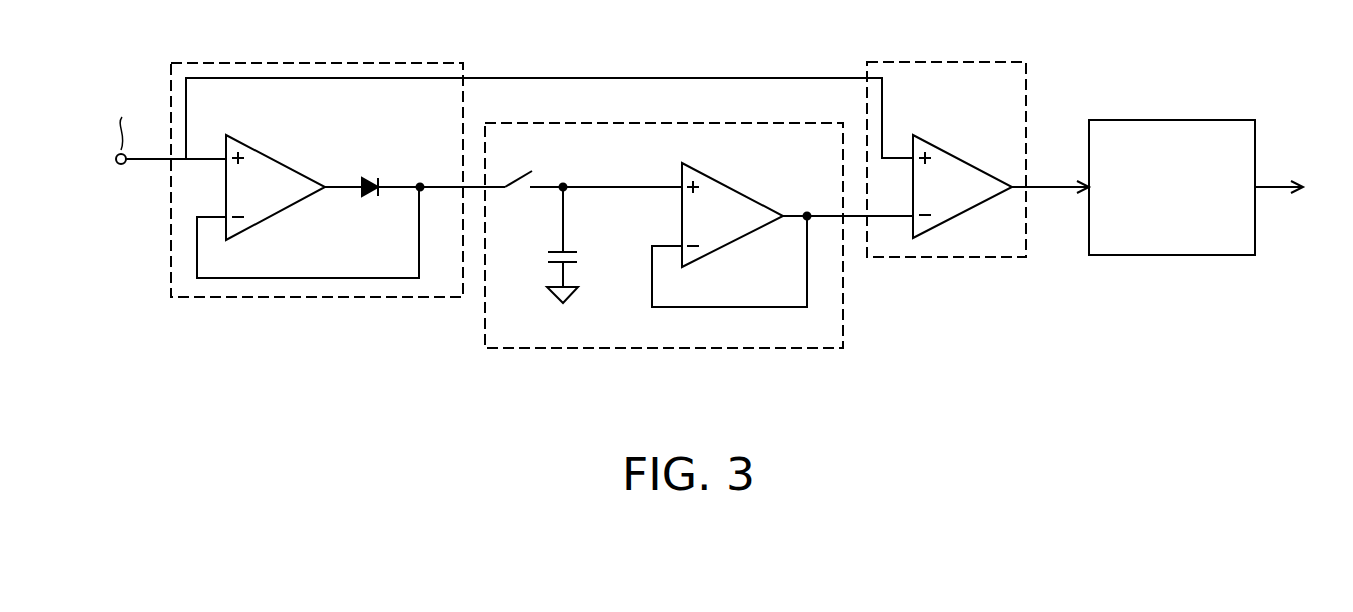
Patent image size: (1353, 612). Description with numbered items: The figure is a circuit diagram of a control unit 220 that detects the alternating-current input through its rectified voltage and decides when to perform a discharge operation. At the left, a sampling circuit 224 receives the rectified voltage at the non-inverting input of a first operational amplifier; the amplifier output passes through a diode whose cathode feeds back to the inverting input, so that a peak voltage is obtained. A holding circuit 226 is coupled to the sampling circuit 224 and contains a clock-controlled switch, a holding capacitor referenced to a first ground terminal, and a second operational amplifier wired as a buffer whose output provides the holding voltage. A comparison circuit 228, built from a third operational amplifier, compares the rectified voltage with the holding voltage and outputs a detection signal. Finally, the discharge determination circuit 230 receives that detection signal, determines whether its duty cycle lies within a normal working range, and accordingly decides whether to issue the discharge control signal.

The control unit 220 is at (705, 236).
The sampling circuit 224 is at (317, 297).
The holding circuit 226 is at (777, 348).
The comparison circuit 228 is at (957, 257).
The discharge determination circuit 230 is at (1165, 120).